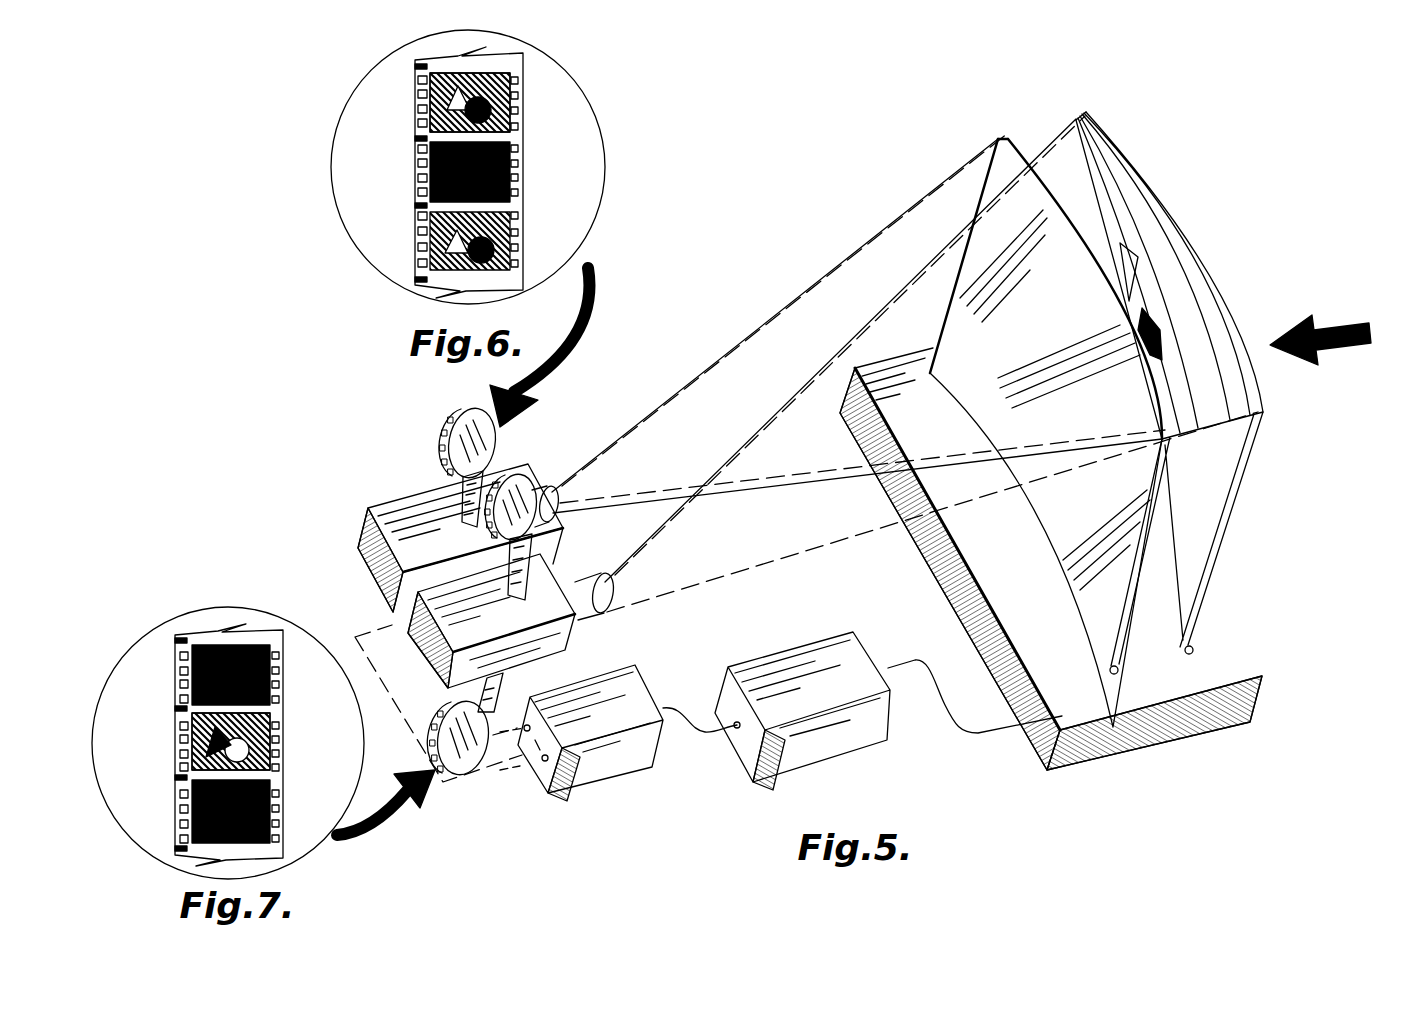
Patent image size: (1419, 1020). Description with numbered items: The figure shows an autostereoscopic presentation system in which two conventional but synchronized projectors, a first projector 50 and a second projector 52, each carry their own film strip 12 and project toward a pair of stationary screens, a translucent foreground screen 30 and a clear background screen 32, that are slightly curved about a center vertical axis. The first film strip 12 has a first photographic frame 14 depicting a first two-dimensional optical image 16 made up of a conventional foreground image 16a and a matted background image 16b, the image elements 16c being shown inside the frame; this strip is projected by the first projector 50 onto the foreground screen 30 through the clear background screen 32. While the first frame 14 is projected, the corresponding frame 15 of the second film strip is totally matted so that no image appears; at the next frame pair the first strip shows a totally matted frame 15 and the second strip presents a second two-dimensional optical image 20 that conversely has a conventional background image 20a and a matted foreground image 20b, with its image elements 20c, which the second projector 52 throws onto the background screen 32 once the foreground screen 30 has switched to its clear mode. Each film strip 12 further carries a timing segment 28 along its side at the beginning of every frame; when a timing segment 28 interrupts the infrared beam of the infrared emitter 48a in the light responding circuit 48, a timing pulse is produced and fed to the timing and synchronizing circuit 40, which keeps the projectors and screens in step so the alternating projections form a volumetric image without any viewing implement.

In FIG. 6, the film strip 12 is at (510, 65).
In FIG. 7, the film strip 12 is at (187, 634).
In FIG. 5, the film strip 12 is at (448, 437).
In FIG. 6, the first photographic frame 14 is at (418, 101).
In FIG. 7, the first photographic frame 14 is at (229, 747).
In FIG. 6, the matted frame 15 is at (515, 190).
In FIG. 7, the matted frame 15 is at (192, 655).
In FIG. 6, the first two-dimensional optical image 16 is at (515, 95).
In FIG. 6, the foreground image 16a is at (432, 126).
In FIG. 6, the matted background image 16b is at (503, 130).
In FIG. 6, the circle image element 16c is at (512, 133).
In FIG. 7, the second two-dimensional optical image 20 is at (197, 733).
In FIG. 7, the background image 20a is at (267, 763).
In FIG. 7, the matted foreground image 20b is at (189, 757).
In FIG. 7, the frame portion 20c is at (190, 780).
In FIG. 6, the timing segment 28 is at (415, 67).
In FIG. 7, the timing segment 28 is at (181, 744).
In FIG. 5, the foreground screen 30 is at (1098, 130).
In FIG. 5, the background screen 32 is at (1002, 136).
In FIG. 5, the timing and synchronizing circuit 40 is at (850, 743).
In FIG. 5, the light responding circuit 48 is at (607, 763).
In FIG. 5, the infrared emitter 48a is at (524, 747).
In FIG. 5, the first projector 50 is at (365, 548).
In FIG. 5, the second projector 52 is at (420, 630).